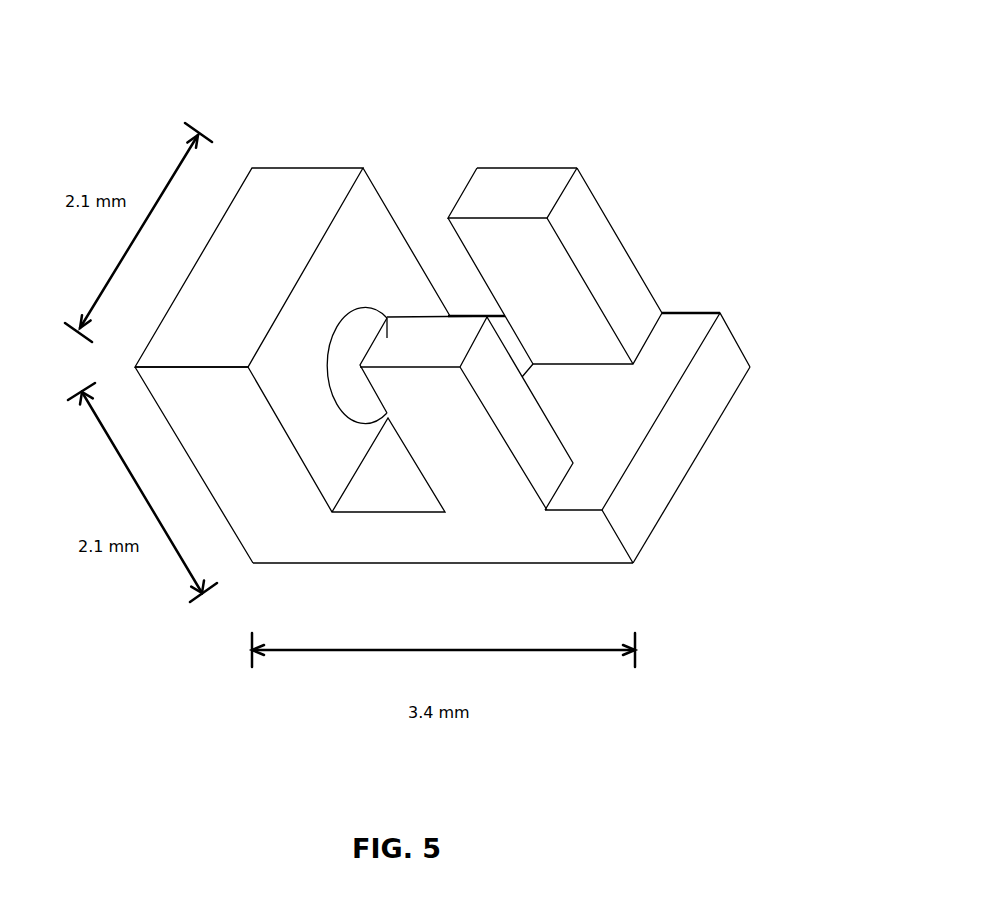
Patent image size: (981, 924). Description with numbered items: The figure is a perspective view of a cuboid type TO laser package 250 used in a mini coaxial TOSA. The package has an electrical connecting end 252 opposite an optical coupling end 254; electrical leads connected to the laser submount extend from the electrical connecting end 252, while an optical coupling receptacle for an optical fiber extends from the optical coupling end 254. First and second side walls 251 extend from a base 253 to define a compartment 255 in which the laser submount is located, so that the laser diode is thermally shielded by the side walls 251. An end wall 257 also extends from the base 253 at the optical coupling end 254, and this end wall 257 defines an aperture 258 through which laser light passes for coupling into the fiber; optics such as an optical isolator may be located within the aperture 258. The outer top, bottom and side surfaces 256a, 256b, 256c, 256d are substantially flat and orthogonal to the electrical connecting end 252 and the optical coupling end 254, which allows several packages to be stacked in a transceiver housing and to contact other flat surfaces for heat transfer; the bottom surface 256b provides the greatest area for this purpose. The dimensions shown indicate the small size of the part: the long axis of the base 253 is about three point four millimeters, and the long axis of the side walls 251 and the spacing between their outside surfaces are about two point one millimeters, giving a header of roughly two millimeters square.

The cuboid type TO laser package 250 is at (696, 123).
The first and second side walls 251 is at (490, 167).
The electrical connecting end 252 is at (755, 400).
The base 253 is at (730, 332).
The optical coupling end 254 is at (126, 368).
The compartment 255 is at (592, 397).
The top surface 256a is at (542, 178).
The bottom surface 256b is at (614, 577).
The side surface 256c is at (477, 514).
The side surface 256d is at (515, 157).
The end wall 257 is at (310, 170).
The aperture 258 is at (322, 360).